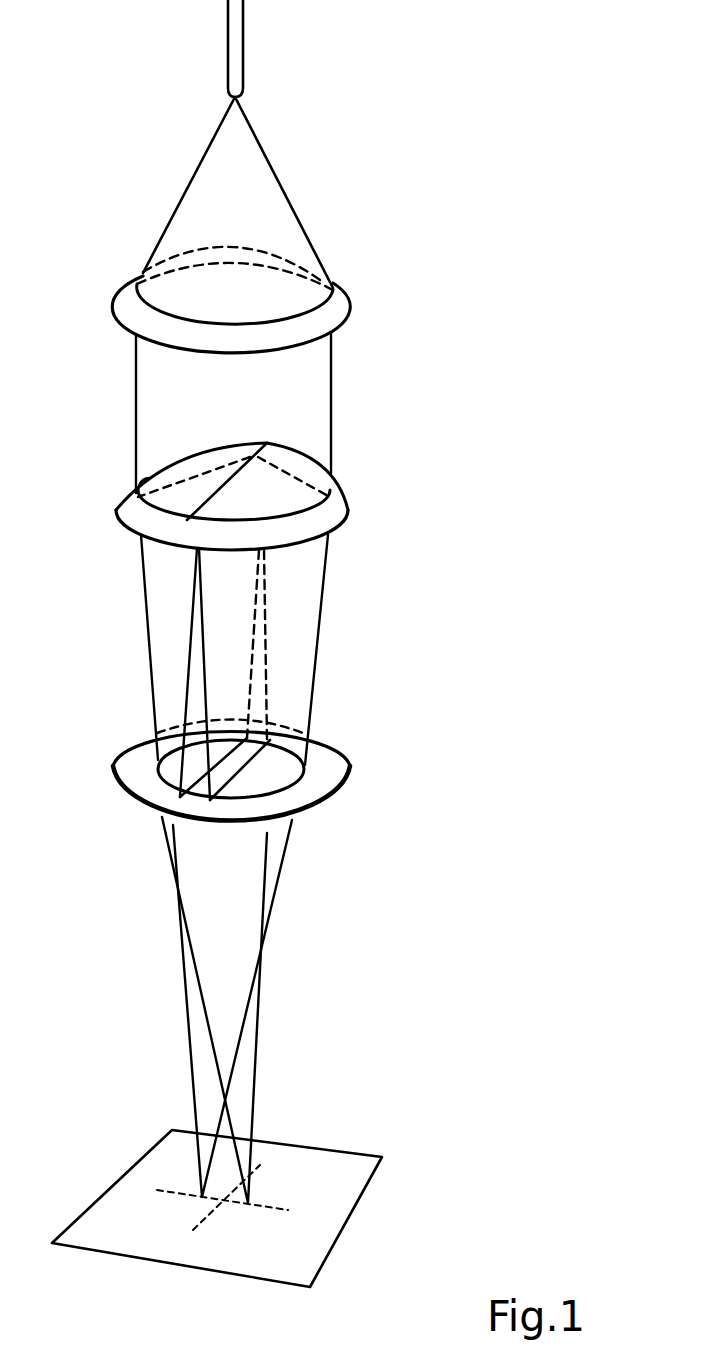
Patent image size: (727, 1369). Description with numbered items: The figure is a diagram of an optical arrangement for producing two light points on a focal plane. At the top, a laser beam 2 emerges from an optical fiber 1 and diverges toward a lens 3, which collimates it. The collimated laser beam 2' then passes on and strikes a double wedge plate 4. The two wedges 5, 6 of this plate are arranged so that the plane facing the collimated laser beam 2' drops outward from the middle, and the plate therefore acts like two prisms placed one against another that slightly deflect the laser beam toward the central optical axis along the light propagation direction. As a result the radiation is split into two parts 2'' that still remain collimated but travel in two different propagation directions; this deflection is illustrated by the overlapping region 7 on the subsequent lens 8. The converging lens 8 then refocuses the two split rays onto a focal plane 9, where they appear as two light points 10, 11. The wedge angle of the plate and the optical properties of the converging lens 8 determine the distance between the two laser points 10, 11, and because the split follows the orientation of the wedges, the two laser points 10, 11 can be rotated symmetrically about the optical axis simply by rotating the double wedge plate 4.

The optical fiber 1 is at (244, 30).
The laser beam 2 is at (266, 192).
The collimated laser beam 2' is at (278, 412).
The split radiation parts 2'' is at (292, 667).
The lens 3 is at (338, 306).
The double wedge plate 4 is at (342, 518).
The wedge 5 is at (190, 490).
The wedge 6 is at (300, 495).
The overlapping region 7 is at (218, 778).
The converging lens 8 is at (333, 784).
The focal plane 9 is at (343, 1198).
The light point 10 is at (201, 1194).
The light point 11 is at (249, 1201).